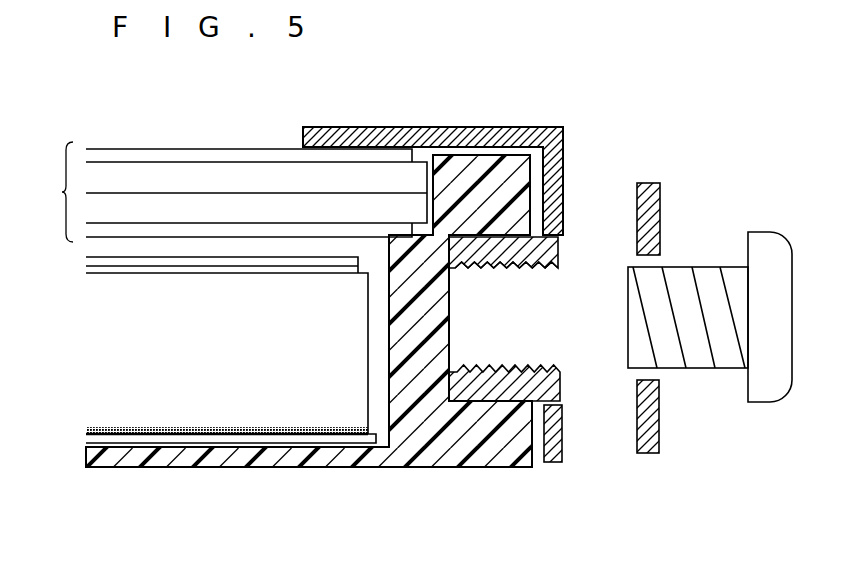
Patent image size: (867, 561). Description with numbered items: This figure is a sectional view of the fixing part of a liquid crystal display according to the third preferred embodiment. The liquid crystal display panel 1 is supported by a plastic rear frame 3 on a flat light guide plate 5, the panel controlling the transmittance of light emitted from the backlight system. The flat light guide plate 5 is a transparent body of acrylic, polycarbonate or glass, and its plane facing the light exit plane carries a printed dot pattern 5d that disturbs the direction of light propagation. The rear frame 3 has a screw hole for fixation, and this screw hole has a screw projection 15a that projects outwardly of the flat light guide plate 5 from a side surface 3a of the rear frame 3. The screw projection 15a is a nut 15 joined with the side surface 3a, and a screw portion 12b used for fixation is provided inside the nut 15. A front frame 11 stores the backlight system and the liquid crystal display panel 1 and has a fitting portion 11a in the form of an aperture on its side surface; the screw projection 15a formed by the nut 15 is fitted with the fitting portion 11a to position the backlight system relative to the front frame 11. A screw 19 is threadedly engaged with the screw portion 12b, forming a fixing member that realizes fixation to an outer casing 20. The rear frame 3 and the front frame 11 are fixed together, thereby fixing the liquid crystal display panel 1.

The liquid crystal display panel 1 is at (62, 192).
The rear frame 3 is at (86, 453).
The side surface 3a is at (532, 443).
The flat light guide plate 5 is at (102, 348).
The printed dot pattern 5d is at (118, 430).
The front frame 11 is at (563, 204).
The fitting portion 11a is at (562, 425).
The screw portion 12b is at (552, 270).
The nut 15 is at (497, 256).
The screw projection 15a is at (560, 375).
The screw 19 is at (762, 232).
The outer casing 20 is at (660, 212).